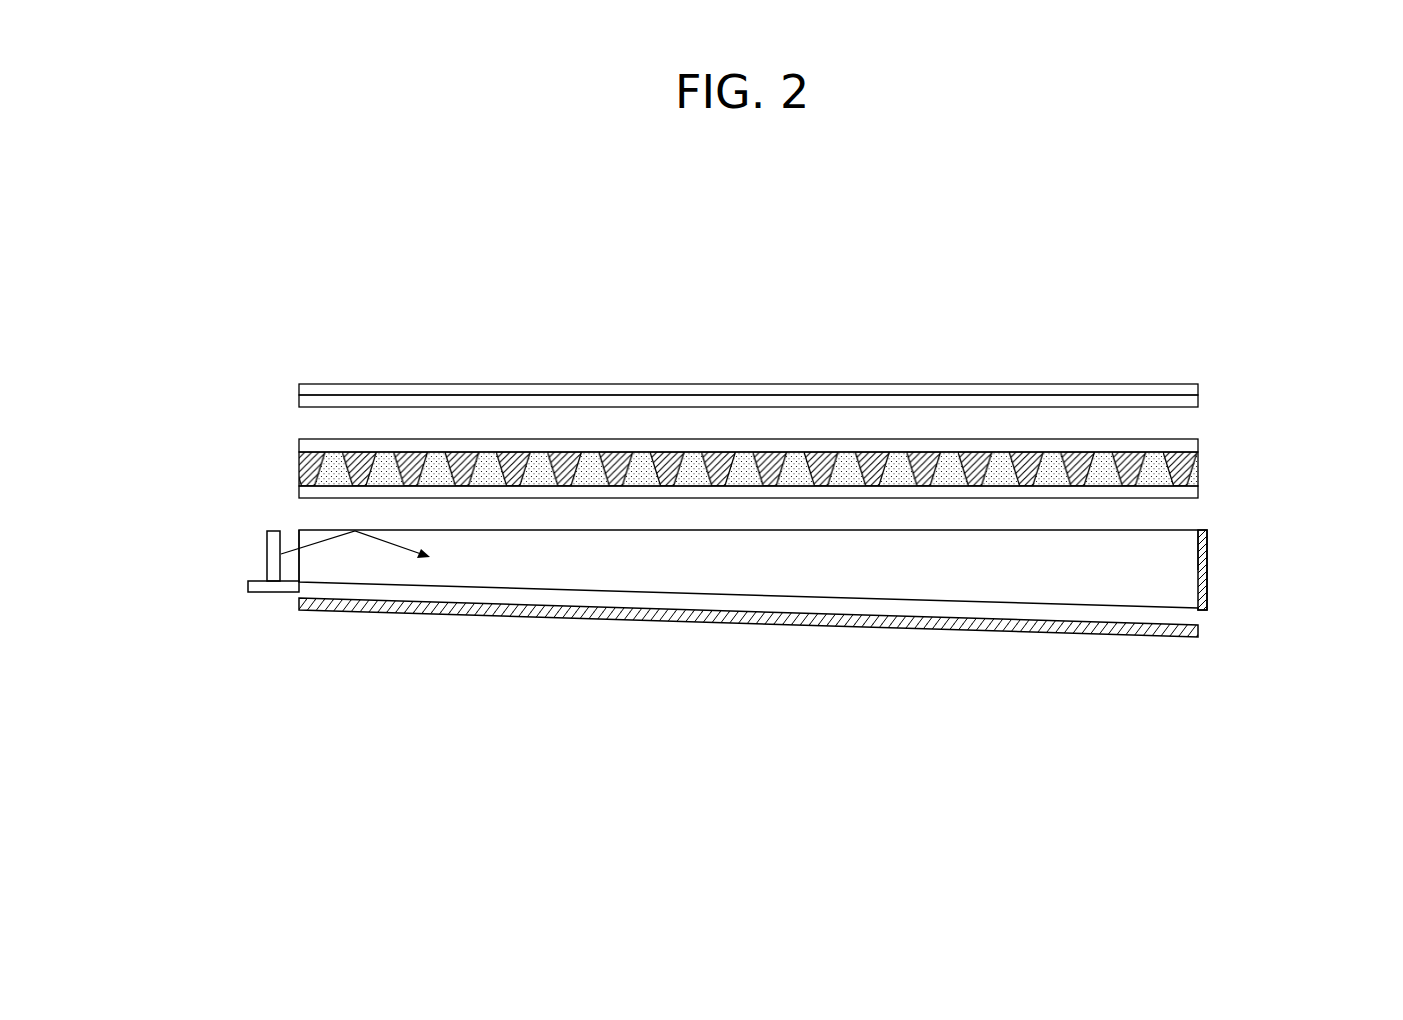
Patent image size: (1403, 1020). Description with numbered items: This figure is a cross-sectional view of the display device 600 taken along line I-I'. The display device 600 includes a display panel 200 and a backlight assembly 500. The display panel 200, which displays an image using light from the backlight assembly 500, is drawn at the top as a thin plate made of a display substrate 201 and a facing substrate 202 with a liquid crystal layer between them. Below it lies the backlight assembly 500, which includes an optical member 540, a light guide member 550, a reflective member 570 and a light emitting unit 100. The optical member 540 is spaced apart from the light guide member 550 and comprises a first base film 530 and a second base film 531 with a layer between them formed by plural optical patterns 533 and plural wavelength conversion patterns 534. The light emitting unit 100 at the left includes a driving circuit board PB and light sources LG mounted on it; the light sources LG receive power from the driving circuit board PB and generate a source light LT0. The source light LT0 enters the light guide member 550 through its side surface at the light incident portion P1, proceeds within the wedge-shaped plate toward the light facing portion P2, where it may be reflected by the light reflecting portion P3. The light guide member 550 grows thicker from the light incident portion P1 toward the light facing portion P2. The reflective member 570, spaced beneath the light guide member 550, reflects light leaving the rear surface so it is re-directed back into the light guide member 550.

The display device 600 is at (1036, 337).
The display panel 200 is at (1285, 362).
The facing substrate 202 is at (1198, 391).
The display substrate 201 is at (1198, 401).
The backlight assembly 500 is at (1340, 458).
The optical member 540 is at (1285, 435).
The second base film 531 is at (1198, 446).
The optical pattern 533 is at (1198, 471).
The wavelength conversion pattern 534 is at (212, 447).
The first base film 530 is at (1198, 493).
The light guide member 550 is at (565, 574).
The light incident portion P1 is at (297, 538).
The light facing portion P2 is at (1200, 570).
The light reflecting portion P3 is at (1203, 585).
The source light LT0 is at (383, 543).
The reflective member 570 is at (1198, 631).
The light emitting unit 100 is at (180, 540).
The light source LG is at (273, 556).
The driving circuit board PB is at (258, 590).